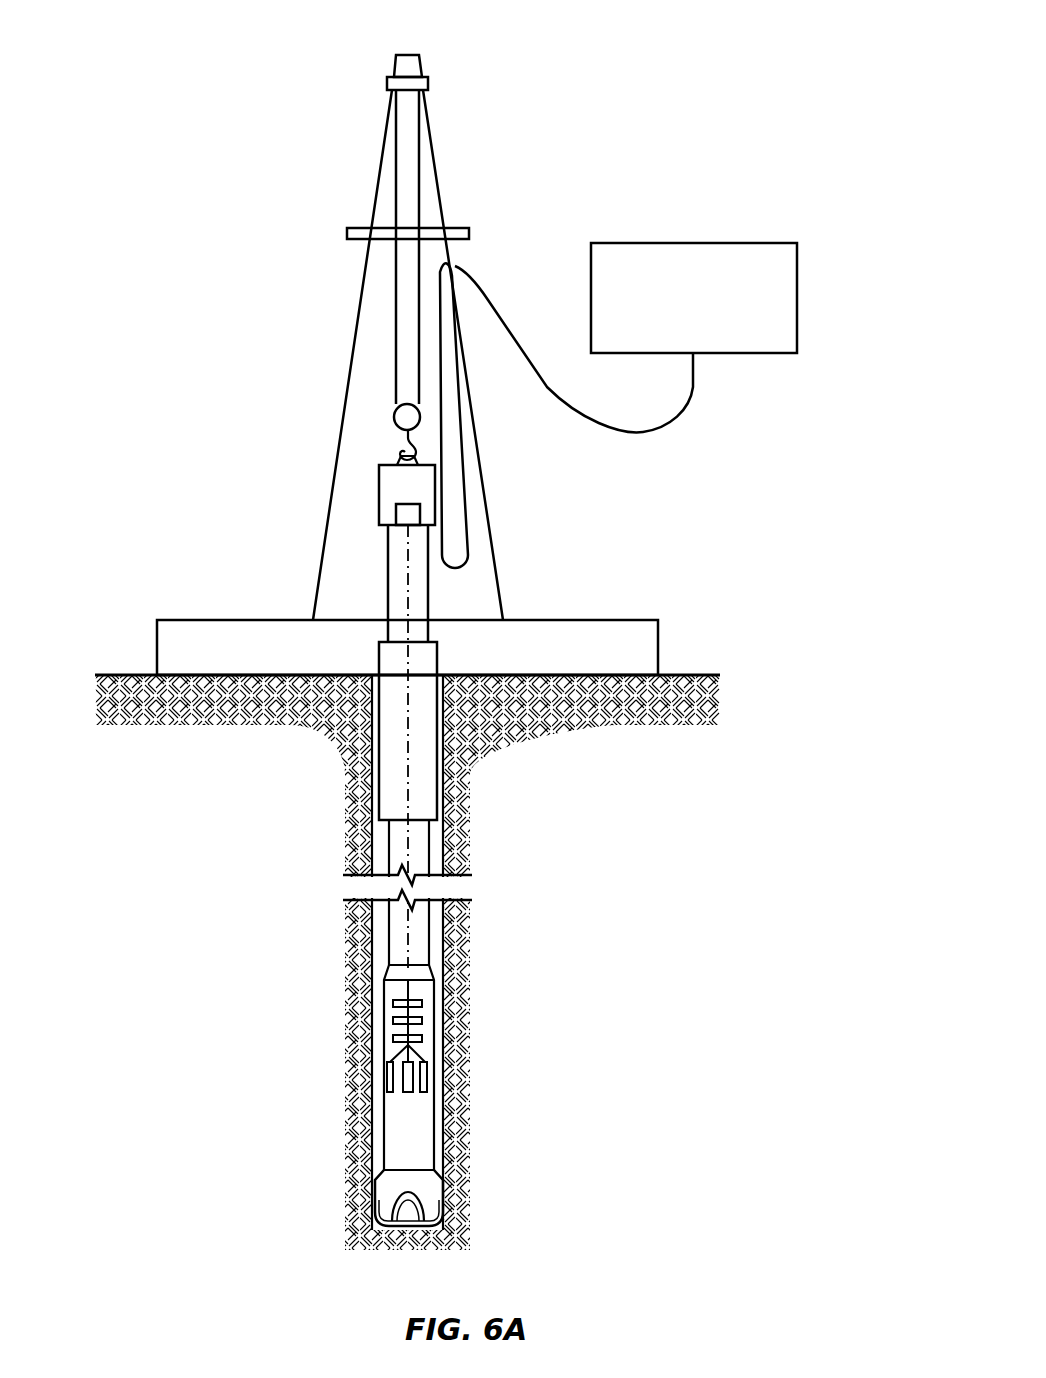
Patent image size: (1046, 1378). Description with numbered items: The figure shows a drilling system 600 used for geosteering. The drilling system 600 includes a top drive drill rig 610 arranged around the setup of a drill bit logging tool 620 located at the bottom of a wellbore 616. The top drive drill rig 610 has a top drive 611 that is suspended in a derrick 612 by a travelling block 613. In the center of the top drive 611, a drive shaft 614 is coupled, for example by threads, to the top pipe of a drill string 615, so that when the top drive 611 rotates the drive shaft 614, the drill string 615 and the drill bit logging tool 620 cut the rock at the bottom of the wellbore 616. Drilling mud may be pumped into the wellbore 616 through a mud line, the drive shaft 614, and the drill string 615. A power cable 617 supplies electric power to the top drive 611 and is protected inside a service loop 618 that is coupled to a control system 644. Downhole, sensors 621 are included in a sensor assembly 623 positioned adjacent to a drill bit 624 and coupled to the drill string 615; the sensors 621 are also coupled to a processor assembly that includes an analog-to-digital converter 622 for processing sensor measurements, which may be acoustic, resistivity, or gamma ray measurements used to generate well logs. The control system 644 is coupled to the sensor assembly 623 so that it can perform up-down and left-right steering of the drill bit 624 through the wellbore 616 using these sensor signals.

The drilling system 600 is at (727, 117).
The top drive drill rig 610 is at (143, 56).
The top drive 611 is at (379, 495).
The derrick 612 is at (325, 538).
The travelling block 613 is at (394, 417).
The drive shaft 614 is at (388, 548).
The drill string 615 is at (389, 850).
The wellbore 616 is at (370, 835).
The power cable 617 is at (461, 472).
The service loop 618 is at (643, 432).
The drill bit logging tool 620 is at (265, 958).
The sensors 621 is at (388, 1077).
The analog-to-digital converter 622 is at (393, 1020).
The sensor assembly 623 is at (384, 993).
The drill bit 624 is at (383, 1197).
The control system 644 is at (693, 243).